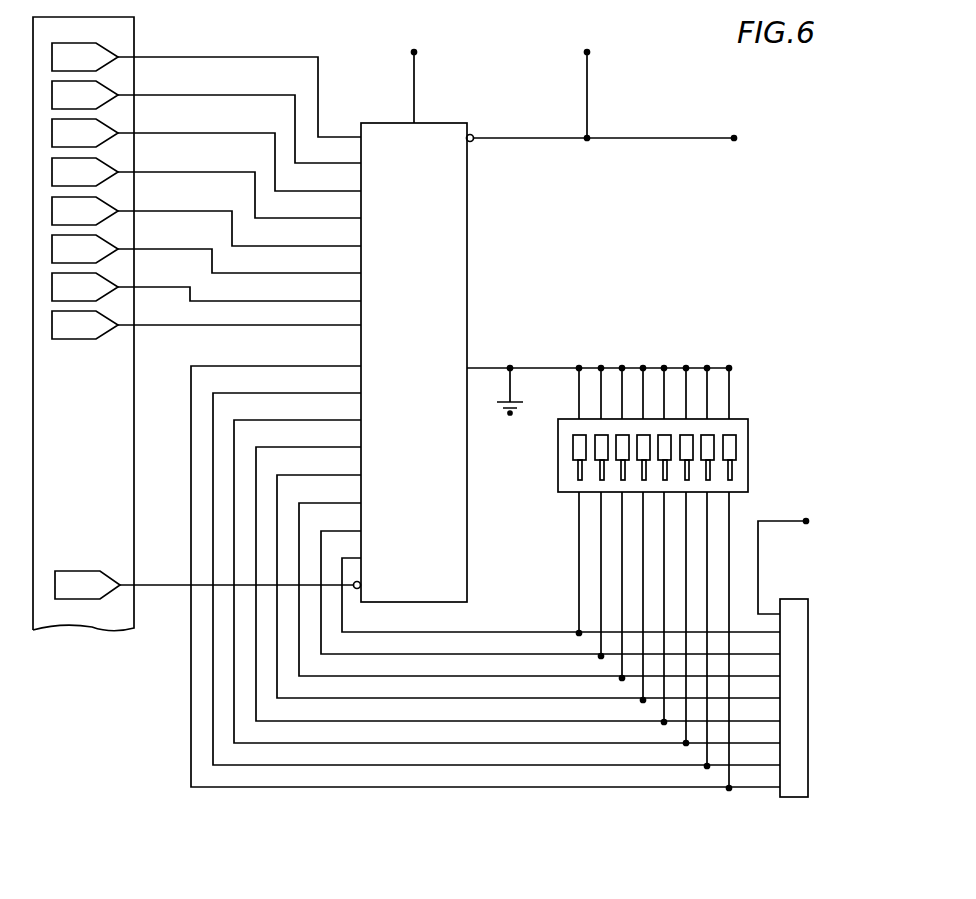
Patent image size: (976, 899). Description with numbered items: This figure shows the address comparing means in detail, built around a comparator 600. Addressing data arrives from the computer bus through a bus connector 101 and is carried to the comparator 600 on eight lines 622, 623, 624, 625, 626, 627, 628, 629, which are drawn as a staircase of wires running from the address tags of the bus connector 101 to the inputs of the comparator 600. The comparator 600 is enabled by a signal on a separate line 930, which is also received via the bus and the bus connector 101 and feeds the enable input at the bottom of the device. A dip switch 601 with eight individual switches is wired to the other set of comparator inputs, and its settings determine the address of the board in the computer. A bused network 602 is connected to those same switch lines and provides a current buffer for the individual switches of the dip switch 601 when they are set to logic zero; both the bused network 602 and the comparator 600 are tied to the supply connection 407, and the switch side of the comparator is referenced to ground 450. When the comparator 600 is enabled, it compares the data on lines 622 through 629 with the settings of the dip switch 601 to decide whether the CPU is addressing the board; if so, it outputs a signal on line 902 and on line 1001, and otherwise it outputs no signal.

The bus connector 101 is at (98, 441).
The addressing data line 622 is at (160, 328).
The addressing data line 623 is at (154, 286).
The addressing data line 624 is at (168, 248).
The addressing data line 625 is at (180, 210).
The addressing data line 626 is at (200, 171).
The addressing data line 627 is at (210, 133).
The addressing data line 628 is at (212, 95).
The addressing data line 629 is at (214, 57).
The enable line 930 is at (163, 590).
The comparator 600 is at (469, 230).
The +5V DVcc supply 407 is at (418, 81).
The output line 902 is at (590, 82).
The output line 1001 is at (689, 142).
The ground 450 is at (513, 413).
The dip switch 601 is at (750, 440).
The bused network 602 is at (810, 633).